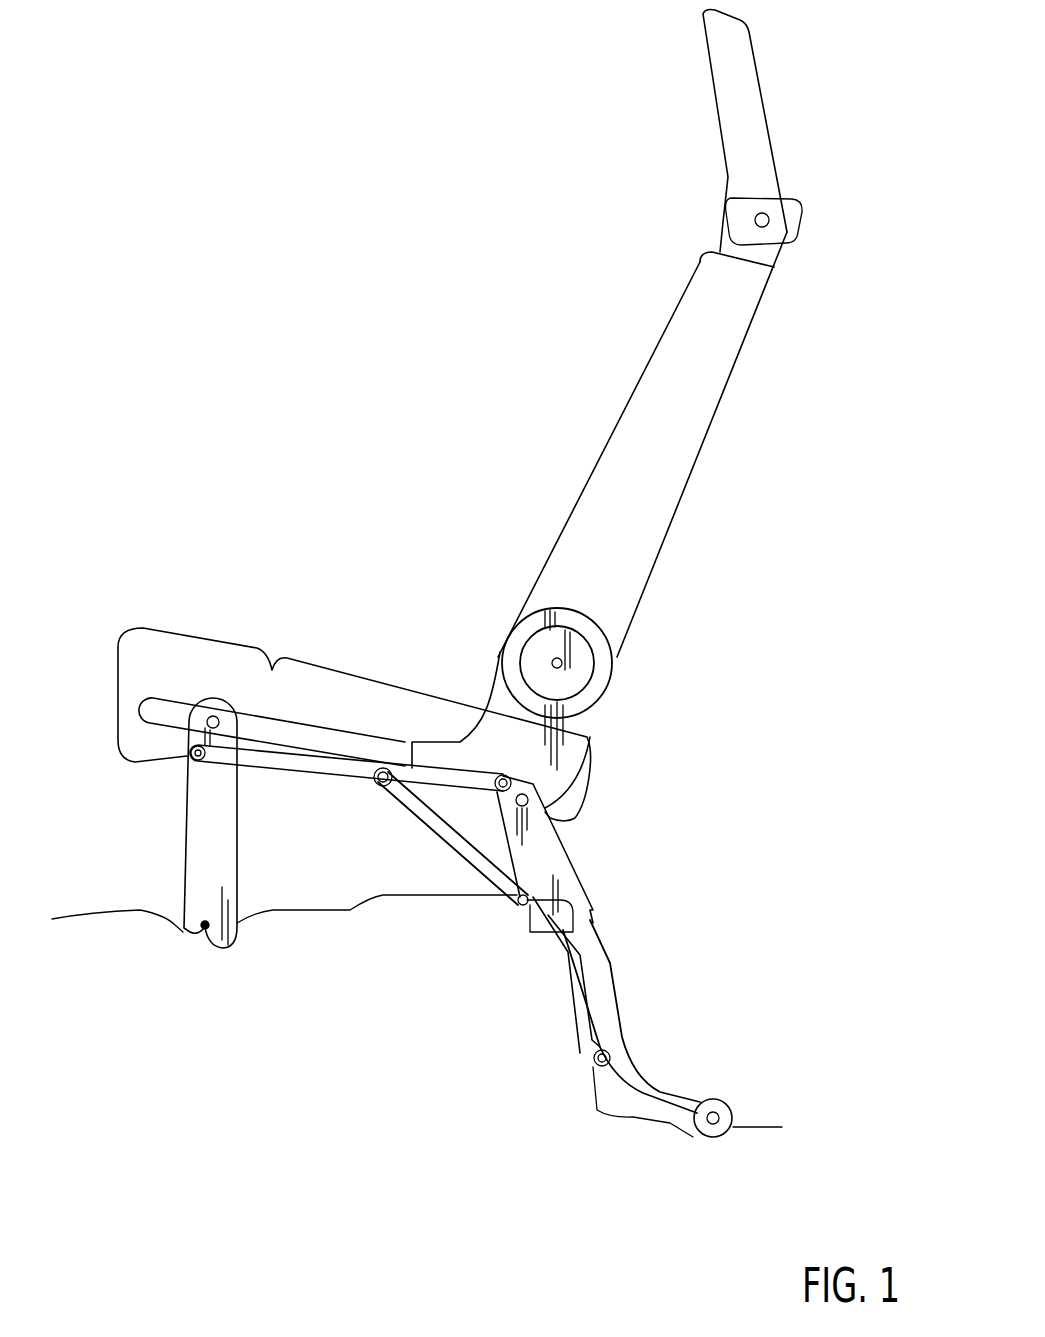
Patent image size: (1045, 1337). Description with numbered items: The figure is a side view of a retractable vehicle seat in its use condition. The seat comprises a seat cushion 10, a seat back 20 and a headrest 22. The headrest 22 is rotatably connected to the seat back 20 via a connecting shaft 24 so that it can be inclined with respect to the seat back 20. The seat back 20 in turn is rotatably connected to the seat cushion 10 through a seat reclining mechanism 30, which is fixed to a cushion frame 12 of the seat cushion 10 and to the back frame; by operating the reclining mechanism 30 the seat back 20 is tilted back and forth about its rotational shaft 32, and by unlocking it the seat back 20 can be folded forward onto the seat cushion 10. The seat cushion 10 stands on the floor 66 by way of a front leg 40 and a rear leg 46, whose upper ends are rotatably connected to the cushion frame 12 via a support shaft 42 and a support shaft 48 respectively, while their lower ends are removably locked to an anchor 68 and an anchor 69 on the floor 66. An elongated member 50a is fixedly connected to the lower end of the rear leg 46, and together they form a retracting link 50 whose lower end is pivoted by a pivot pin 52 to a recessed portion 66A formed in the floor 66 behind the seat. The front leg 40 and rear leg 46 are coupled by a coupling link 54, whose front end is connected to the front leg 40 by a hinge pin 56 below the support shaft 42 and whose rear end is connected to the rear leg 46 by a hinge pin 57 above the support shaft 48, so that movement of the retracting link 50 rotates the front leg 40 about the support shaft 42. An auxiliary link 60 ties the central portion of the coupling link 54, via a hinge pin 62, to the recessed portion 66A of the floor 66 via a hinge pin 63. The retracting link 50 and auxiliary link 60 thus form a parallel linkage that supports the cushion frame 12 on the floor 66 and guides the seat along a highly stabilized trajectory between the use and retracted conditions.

The seat cushion 10 is at (241, 645).
The cushion frame 12 is at (328, 738).
The seat back 20 is at (690, 487).
The headrest 22 is at (767, 113).
The connecting shaft 24 is at (770, 220).
The seat reclining mechanism 30 is at (590, 645).
The rotational shaft 32 is at (560, 667).
The front leg 40 is at (203, 824).
The support shaft 42 is at (216, 715).
The rear leg 46 is at (563, 877).
The support shaft 48 is at (528, 801).
The retracting link 50 is at (645, 983).
The elongated member 50a is at (597, 952).
The pivot pin 52 is at (715, 1110).
The coupling link 54 is at (263, 760).
The hinge pin 56 is at (191, 754).
The hinge pin 57 is at (502, 775).
The auxiliary link 60 is at (437, 817).
The hinge pin 62 is at (384, 768).
The hinge pin 63 is at (605, 1050).
The floor 66 is at (80, 935).
The recessed portion 66A is at (768, 1127).
The anchor 68 is at (205, 930).
The anchor 69 is at (523, 905).